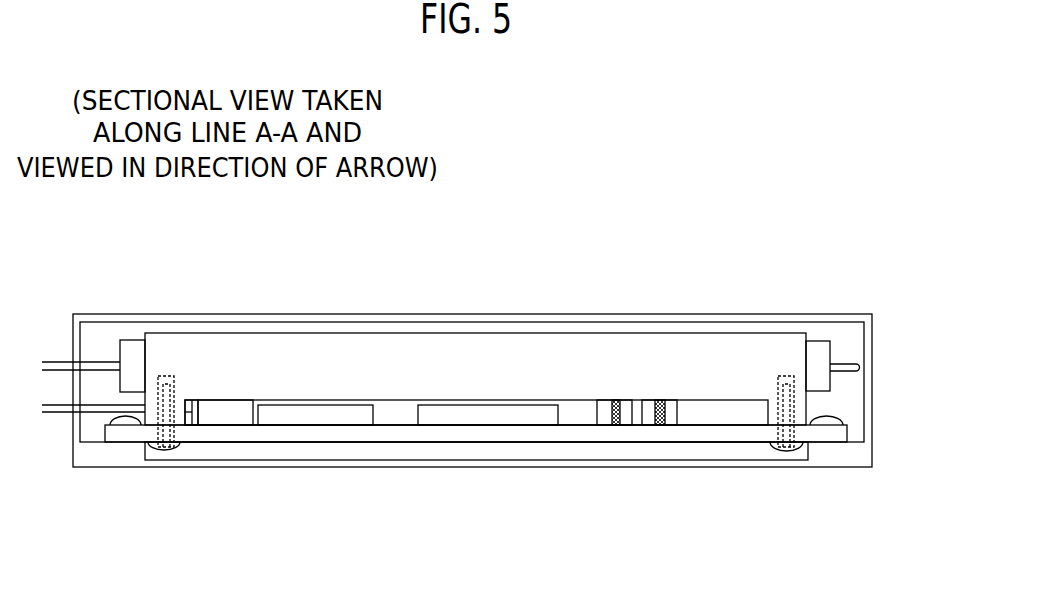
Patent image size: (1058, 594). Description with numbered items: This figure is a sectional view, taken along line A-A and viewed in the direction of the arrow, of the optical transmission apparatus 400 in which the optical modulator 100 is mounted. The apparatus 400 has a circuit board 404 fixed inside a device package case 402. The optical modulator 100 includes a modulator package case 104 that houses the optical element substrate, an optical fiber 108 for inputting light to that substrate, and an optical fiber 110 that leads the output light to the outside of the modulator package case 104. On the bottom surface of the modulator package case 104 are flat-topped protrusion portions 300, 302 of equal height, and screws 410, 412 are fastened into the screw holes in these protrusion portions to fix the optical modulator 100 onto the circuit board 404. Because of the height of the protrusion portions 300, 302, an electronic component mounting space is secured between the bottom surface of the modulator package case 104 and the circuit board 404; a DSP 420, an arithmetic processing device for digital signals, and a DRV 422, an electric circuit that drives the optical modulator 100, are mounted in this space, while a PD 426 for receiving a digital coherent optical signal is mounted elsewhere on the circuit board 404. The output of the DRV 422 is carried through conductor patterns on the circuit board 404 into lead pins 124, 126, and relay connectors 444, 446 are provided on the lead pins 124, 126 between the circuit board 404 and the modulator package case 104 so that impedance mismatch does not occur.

The optical transmission apparatus 400 is at (248, 81).
The device package case 402 is at (466, 356).
The optical fiber 110 is at (81, 348).
The optical modulator 100 is at (475, 311).
The modulator package case 104 is at (475, 328).
The optical fiber 108 is at (869, 323).
The circuit board 404 is at (476, 479).
The screw 410 is at (148, 452).
The screw 412 is at (800, 451).
The protrusion portion 300 is at (192, 473).
The protrusion portion 302 is at (759, 481).
The PD (photo diode) 426 is at (238, 485).
The DSP (digital signal processor) 420 is at (328, 487).
The DRV (drive circuit) 422 is at (488, 482).
The relay connector 444 is at (572, 487).
The lead pin 124 is at (588, 487).
The lead pin 126 is at (638, 481).
The relay connector 446 is at (649, 492).